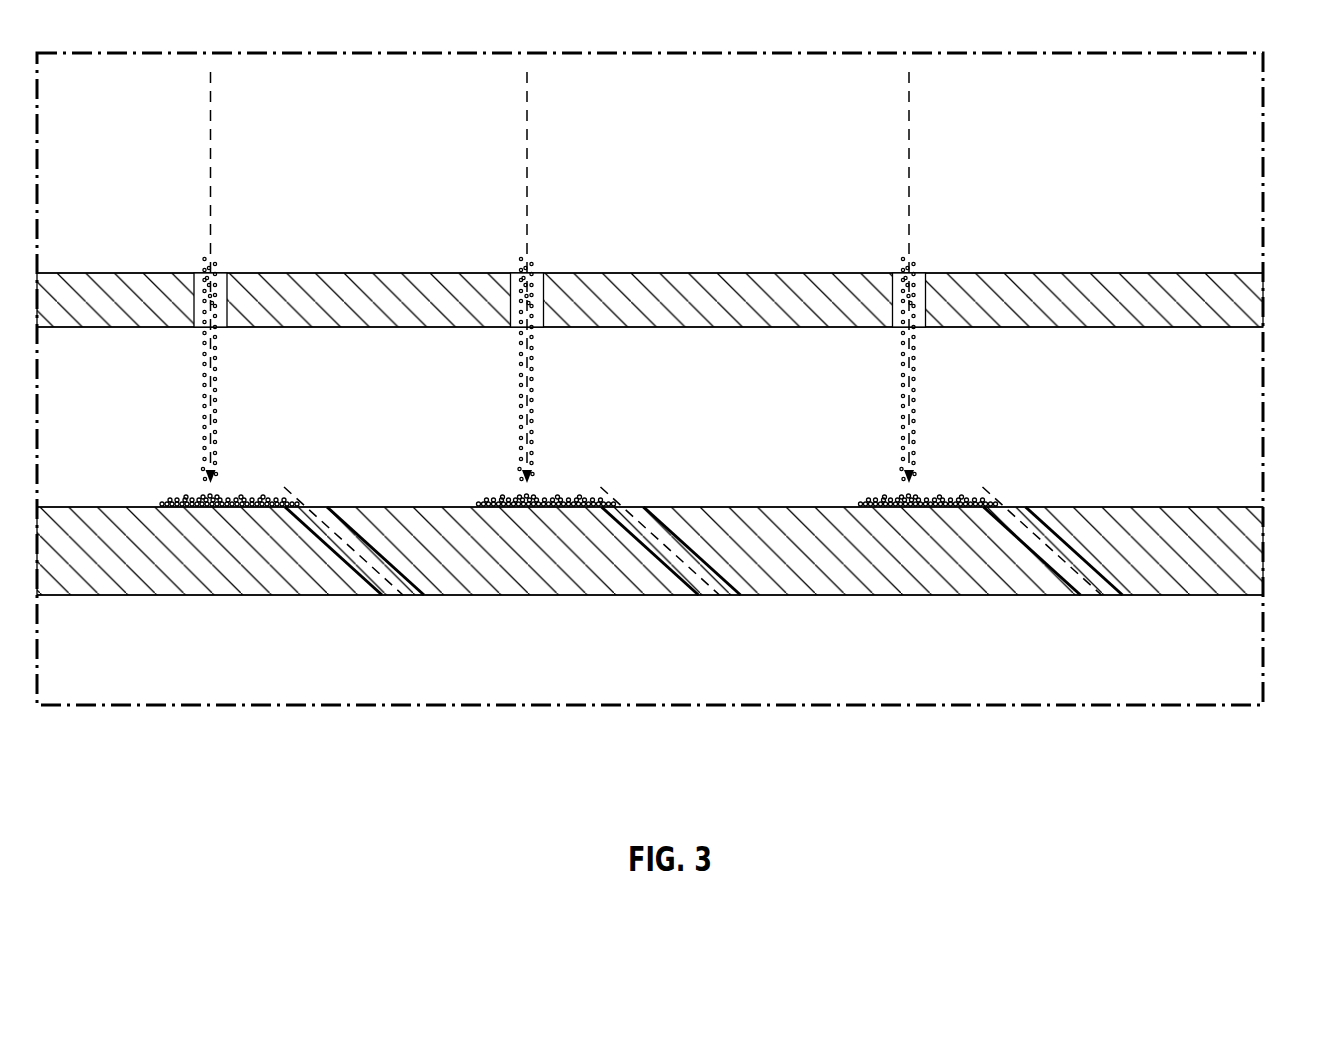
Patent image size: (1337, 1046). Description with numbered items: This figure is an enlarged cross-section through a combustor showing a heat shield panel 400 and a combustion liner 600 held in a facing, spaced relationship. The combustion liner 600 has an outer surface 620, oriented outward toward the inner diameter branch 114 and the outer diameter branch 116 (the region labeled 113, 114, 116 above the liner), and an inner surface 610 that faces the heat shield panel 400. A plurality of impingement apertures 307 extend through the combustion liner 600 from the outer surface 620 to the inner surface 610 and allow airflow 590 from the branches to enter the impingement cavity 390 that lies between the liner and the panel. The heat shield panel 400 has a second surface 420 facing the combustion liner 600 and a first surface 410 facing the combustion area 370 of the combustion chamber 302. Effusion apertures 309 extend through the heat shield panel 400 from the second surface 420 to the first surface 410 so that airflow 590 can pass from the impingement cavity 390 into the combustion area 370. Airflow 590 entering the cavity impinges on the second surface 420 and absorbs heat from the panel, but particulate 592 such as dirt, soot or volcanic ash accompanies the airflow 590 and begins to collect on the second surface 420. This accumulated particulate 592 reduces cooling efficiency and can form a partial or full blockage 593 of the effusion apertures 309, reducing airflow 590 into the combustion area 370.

The airflow 590 is at (669, 368).
The impingement apertures 307 is at (596, 274).
The particulate 592 is at (535, 368).
The blockage 593 is at (579, 527).
The effusion apertures 309 is at (704, 572).
The combustion liner 600 is at (1240, 297).
The outer surface 620 is at (1243, 273).
The inner surface 610 is at (1250, 327).
The heat shield panel 400 is at (1240, 552).
The second surface 420 is at (1247, 507).
The first surface 410 is at (1250, 595).
The impingement cavity 390 is at (94, 364).
The processing region 113 is at (691, 200).
The inner diameter branch 114 is at (740, 200).
The outer diameter branch 116 is at (785, 200).
The combustion chamber 302 is at (635, 697).
The combustion area 370 is at (697, 697).